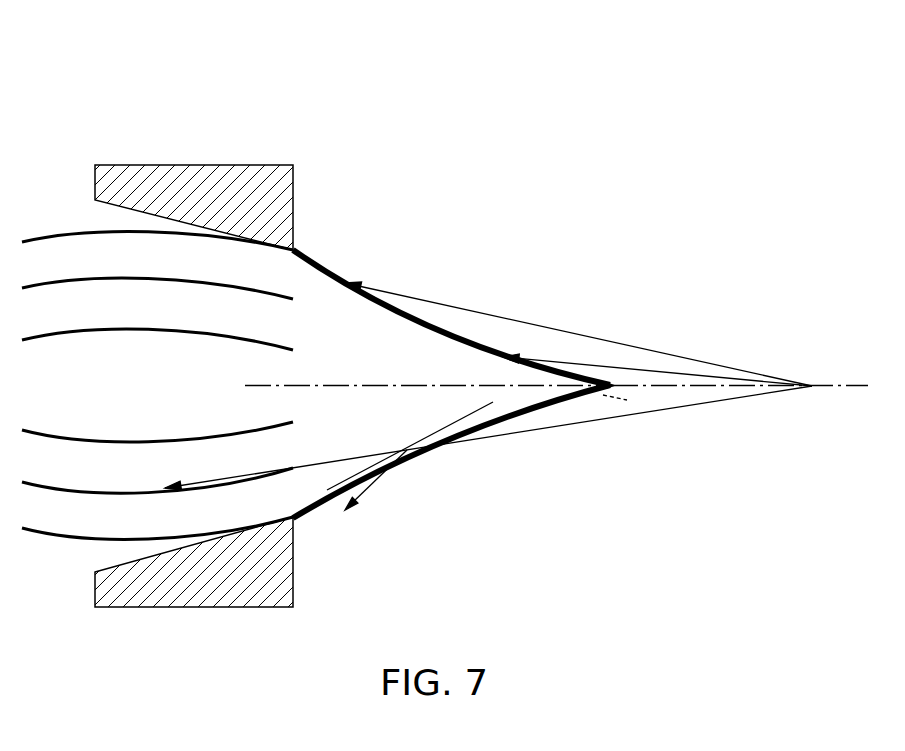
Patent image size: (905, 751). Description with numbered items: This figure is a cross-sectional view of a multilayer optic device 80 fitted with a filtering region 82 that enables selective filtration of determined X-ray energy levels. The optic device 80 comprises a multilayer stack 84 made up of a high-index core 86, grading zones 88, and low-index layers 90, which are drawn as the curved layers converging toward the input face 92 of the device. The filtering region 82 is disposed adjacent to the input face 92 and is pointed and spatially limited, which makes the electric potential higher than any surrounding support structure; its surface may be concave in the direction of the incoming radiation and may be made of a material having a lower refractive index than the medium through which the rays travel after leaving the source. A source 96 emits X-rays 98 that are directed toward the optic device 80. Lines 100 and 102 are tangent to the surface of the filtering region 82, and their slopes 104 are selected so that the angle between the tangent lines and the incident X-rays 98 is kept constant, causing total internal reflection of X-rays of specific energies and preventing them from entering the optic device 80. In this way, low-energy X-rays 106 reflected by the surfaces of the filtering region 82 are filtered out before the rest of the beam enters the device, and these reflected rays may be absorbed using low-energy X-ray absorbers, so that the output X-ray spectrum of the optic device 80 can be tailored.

The multilayer optic device 80 is at (52, 116).
The filtering region 82 is at (358, 354).
The multilayer stack 84 is at (37, 550).
The high-index core 86 is at (139, 388).
The grading zones 88 is at (90, 316).
The low-index layers 90 is at (91, 268).
The input face 92 is at (297, 497).
The source 96 is at (815, 385).
The X-rays 98 is at (690, 342).
The tangent line 100 is at (610, 397).
The tangent line 102 is at (457, 401).
The slopes 104 is at (443, 302).
The low-energy X-rays 106 is at (380, 488).